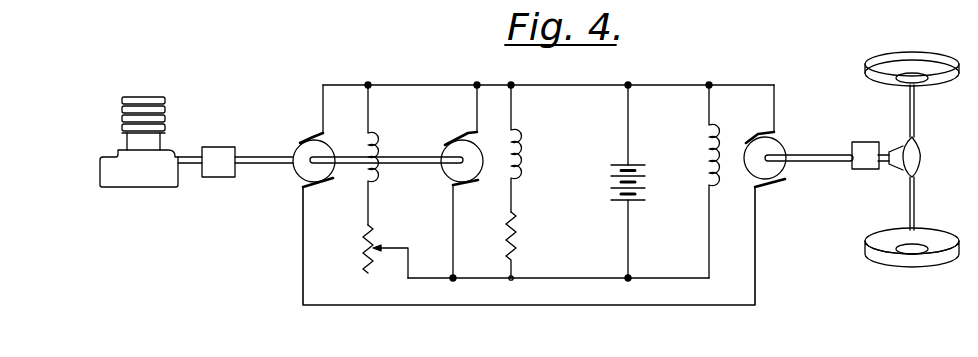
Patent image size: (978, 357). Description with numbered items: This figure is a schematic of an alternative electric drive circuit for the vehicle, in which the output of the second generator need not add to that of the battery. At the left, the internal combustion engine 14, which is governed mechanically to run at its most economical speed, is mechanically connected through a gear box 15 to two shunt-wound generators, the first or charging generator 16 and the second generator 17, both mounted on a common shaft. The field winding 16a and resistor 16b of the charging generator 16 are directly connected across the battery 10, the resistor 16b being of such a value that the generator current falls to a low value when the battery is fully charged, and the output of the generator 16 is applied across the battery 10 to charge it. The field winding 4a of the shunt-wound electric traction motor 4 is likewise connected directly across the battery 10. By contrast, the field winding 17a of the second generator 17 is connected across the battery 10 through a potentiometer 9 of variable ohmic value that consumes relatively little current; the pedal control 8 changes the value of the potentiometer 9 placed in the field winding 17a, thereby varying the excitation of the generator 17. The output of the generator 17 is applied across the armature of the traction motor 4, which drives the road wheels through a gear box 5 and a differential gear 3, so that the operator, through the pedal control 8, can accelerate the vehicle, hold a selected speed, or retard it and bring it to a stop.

The internal combustion engine 14 is at (158, 126).
The gear box 15 is at (227, 137).
The second generator 17 is at (303, 170).
The field winding of second generator 17a is at (377, 147).
The first or charging generator 16 is at (472, 138).
The field winding of first generator 16a is at (515, 167).
The resistor 16b is at (515, 252).
The battery 10 is at (637, 163).
The field winding of motor 4a is at (716, 153).
The electric traction motor 4 is at (773, 150).
The gear box 5 is at (863, 140).
The differential gear 3 is at (920, 147).
The potentiometer 9 is at (362, 250).
The pedal control 8 is at (412, 244).